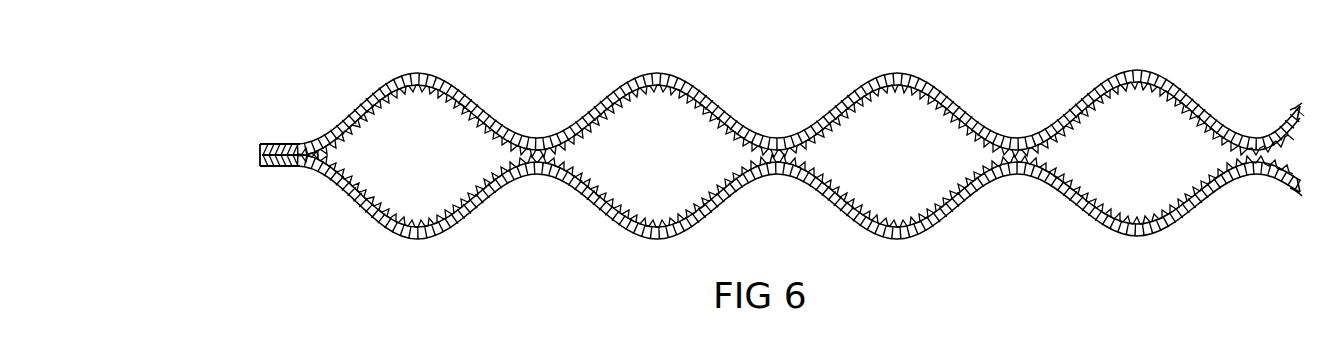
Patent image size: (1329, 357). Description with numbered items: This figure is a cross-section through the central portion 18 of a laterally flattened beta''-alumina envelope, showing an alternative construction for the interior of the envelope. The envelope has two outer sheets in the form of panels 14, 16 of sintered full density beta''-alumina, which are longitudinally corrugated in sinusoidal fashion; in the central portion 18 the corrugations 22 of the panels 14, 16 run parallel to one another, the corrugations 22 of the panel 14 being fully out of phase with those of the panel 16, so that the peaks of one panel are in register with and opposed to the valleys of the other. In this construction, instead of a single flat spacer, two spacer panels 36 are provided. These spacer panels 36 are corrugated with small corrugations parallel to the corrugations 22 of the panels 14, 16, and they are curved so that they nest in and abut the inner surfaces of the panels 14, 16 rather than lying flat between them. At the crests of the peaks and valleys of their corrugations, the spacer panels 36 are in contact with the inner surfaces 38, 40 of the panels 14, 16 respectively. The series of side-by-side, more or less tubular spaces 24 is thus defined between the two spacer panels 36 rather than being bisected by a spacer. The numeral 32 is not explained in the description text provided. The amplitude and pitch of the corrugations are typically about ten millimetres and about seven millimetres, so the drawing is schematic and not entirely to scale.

The panel 14 is at (953, 110).
The panel 16 is at (955, 198).
The central portion 18 is at (1232, 110).
The corrugations 22 is at (822, 207).
The tubular spaces 24 is at (851, 132).
The joined end 32 is at (247, 161).
The spacer panels 36 is at (1155, 84).
The inner surface 38 is at (659, 86).
The inner surface 40 is at (631, 214).